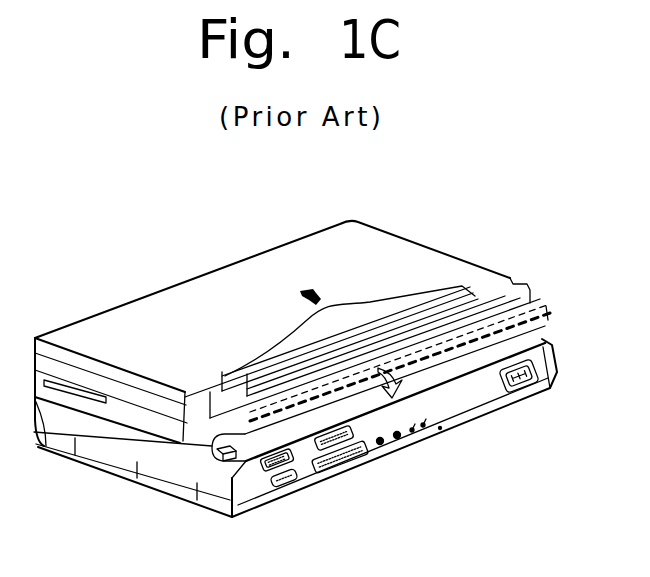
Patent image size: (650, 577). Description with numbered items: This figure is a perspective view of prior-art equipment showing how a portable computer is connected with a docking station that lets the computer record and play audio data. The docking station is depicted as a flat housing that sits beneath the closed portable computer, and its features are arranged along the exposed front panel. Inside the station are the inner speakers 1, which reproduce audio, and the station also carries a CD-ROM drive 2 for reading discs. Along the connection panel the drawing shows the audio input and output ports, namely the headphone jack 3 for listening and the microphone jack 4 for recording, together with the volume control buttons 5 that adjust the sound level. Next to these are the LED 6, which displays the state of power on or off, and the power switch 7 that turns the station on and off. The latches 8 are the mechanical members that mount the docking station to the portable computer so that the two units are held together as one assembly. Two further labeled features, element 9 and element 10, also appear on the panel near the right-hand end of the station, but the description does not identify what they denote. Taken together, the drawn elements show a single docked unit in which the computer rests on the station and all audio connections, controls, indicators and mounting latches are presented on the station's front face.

The inner speakers 1 is at (232, 490).
The CD-ROM drive 2 is at (260, 469).
The headphone jack 3 is at (284, 484).
The microphone jack 4 is at (310, 442).
The volume control buttons 5 is at (340, 470).
The LED for displaying the state of power on/off 6 is at (383, 447).
The power switch 7 is at (402, 437).
The latches 8 is at (423, 427).
The rear panel 9 is at (440, 430).
The power supply socket 10 is at (520, 390).